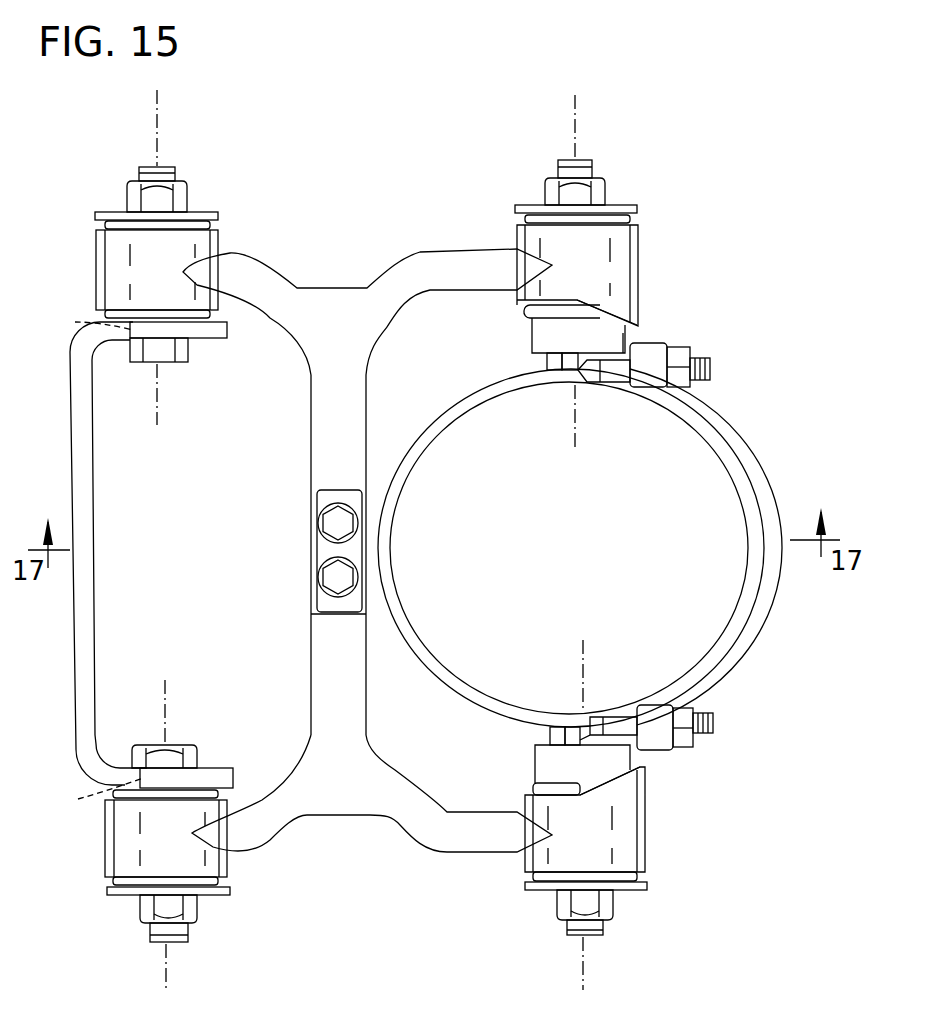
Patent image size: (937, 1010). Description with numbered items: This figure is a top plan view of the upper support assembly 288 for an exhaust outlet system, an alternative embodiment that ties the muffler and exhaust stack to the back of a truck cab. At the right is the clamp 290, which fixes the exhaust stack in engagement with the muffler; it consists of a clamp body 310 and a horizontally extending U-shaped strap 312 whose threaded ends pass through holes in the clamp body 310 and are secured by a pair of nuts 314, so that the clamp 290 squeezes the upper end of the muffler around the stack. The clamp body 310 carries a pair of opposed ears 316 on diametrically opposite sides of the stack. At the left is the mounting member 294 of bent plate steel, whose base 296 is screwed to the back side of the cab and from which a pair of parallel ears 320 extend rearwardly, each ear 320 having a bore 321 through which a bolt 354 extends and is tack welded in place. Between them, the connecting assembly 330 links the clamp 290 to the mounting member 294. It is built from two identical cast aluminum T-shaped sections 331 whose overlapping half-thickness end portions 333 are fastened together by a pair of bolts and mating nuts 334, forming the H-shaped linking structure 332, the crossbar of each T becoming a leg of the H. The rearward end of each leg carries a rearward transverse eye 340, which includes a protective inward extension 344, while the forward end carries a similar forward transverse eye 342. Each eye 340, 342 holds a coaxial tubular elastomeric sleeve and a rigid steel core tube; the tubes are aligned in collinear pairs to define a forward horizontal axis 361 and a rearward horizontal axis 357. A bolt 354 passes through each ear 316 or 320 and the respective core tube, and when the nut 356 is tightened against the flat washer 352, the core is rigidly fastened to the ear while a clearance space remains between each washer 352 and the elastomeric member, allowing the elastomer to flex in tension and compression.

The upper support assembly 288 is at (369, 124).
The clamp 290 is at (758, 422).
The mounting member 294 is at (125, 760).
The base 296 is at (72, 405).
The clamp body 310 is at (611, 550).
The U-shaped strap 312 is at (400, 497).
The nuts 314 is at (708, 360).
The ears 316 is at (608, 345).
The ears 320 is at (215, 337).
The bore 321 is at (86, 563).
The connecting assembly 330 is at (367, 597).
The T-shaped sections 331 is at (338, 292).
The H-shaped linking structure 332 is at (386, 748).
The end portions 333 is at (314, 600).
The bolts and mating nuts 334 is at (330, 523).
The rearward transverse eye 340 is at (640, 268).
The forward transverse eye 342 is at (218, 242).
The inward extension 344 is at (640, 318).
The flat washer 352 is at (216, 213).
The bolt 354 is at (170, 168).
The nut 356 is at (128, 197).
The rearward horizontal axis 357 is at (580, 150).
The forward horizontal axis 361 is at (168, 135).